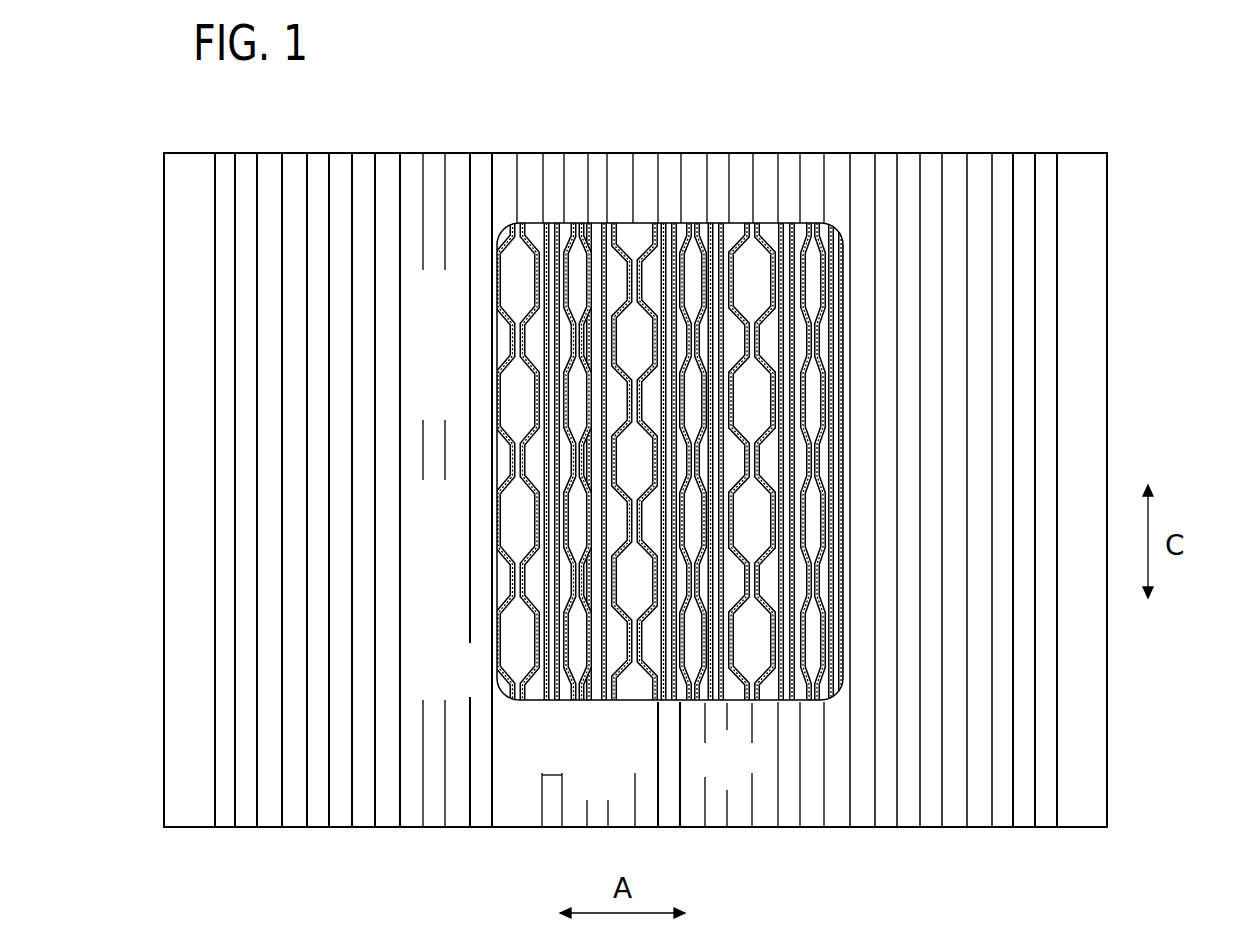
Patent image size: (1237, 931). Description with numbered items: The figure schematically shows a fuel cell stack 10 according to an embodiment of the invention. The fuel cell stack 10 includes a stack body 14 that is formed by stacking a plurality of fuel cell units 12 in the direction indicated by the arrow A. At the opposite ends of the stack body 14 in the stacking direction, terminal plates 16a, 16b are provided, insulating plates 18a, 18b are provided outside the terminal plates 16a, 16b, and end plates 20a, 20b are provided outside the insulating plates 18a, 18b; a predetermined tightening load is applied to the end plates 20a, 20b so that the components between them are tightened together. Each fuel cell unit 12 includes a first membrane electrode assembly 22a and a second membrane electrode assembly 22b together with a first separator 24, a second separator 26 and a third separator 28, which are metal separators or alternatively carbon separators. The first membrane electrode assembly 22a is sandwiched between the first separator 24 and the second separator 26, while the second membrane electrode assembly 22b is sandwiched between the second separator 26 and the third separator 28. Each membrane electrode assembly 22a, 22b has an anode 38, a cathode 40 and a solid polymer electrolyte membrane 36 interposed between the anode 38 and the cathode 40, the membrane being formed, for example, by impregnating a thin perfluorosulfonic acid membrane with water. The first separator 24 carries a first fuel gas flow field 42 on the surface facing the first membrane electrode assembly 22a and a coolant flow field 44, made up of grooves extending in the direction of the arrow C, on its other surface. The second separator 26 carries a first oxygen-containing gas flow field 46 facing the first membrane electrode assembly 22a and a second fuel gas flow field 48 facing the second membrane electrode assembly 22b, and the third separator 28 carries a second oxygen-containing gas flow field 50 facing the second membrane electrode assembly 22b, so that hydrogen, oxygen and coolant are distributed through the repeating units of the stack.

The fuel cell stack 10 is at (400, 96).
The fuel cell unit 12 is at (657, 73).
The stack body 14 is at (878, 63).
The terminal plate 16a is at (245, 554).
The terminal plate 16b is at (1022, 377).
The insulating plate 18a is at (218, 504).
The insulating plate 18b is at (1047, 327).
The end plate 20a is at (187, 460).
The end plate 20b is at (1082, 282).
The first membrane electrode assembly 22a is at (637, 748).
The second membrane electrode assembly 22b is at (676, 726).
The first separator 24 is at (534, 225).
The second separator 26 is at (576, 225).
The third separator 28 is at (627, 225).
The solid polymer electrolyte membrane 36 is at (623, 717).
The anode 38 is at (558, 772).
The cathode 40 is at (634, 772).
The first fuel gas flow field 42 is at (530, 345).
The coolant flow field 44 is at (637, 590).
The first oxygen-containing gas flow field 46 is at (535, 368).
The second fuel gas flow field 48 is at (578, 513).
The second oxygen-containing gas flow field 50 is at (623, 530).